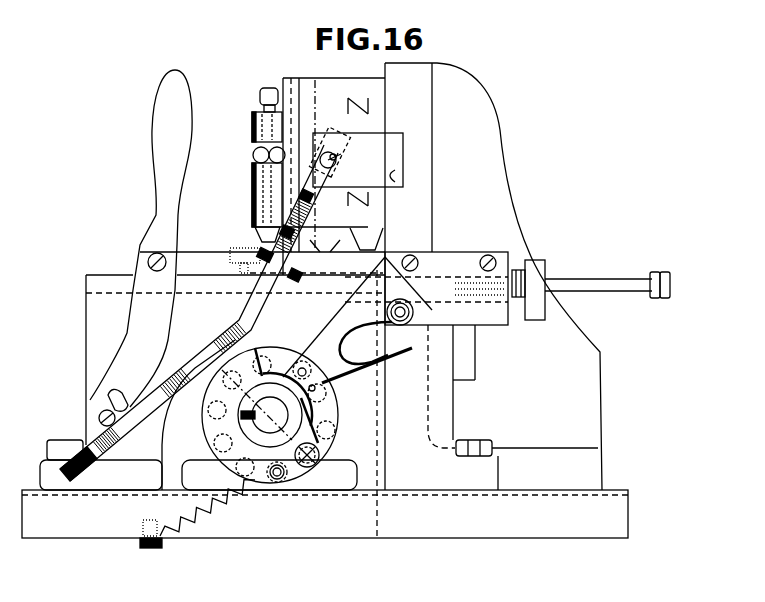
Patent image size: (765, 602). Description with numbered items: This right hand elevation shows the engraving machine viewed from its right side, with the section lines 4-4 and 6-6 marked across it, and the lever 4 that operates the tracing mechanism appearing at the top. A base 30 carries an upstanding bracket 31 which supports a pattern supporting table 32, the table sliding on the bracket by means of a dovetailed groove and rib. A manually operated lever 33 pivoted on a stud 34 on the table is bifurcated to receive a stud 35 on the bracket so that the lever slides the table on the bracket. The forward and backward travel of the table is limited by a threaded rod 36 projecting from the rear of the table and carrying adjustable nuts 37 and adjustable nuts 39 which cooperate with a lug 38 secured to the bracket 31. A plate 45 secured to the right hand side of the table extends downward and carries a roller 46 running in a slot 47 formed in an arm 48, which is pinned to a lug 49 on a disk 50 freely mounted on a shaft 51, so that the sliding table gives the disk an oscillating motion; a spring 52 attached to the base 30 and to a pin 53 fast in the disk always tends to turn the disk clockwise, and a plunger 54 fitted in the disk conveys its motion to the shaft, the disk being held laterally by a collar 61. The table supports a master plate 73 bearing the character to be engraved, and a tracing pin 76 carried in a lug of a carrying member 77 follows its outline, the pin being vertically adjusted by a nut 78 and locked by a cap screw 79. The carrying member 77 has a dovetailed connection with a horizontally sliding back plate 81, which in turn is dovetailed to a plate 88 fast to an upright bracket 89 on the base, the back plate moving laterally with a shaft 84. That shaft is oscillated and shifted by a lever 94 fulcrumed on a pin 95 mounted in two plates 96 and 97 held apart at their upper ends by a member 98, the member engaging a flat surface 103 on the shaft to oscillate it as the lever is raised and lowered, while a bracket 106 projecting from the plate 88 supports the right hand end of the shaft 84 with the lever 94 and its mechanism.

The section line 4-4 / lever 4 is at (348, 132).
The section line 6- 6 is at (205, 337).
The base 30 is at (608, 500).
The upstanding bracket 31 is at (86, 370).
The pattern supporting table 32 is at (200, 253).
The manually operated lever 33 is at (182, 118).
The stud 34 is at (147, 262).
The stud 35 is at (100, 412).
The threaded rod 36 is at (540, 282).
The adjustable nuts 37 is at (517, 258).
The lug 38 is at (535, 322).
The adjustable nuts 39 is at (640, 279).
The plate 45 is at (410, 257).
The roller 46 is at (378, 345).
The slot 47 is at (372, 362).
The arm 48 is at (340, 364).
The lug 49 is at (327, 407).
The disk 50 is at (284, 424).
The shaft 51 is at (305, 452).
The spring 52 is at (226, 500).
The pin 53 is at (280, 478).
The plunger 54 is at (322, 456).
The collar 61 is at (228, 466).
The master plate 73 is at (376, 226).
The tracing pin 76 is at (262, 233).
The carrying member 77 is at (252, 175).
The nut 78 is at (256, 152).
The cap screw 79 is at (259, 95).
The back plate 81 is at (352, 78).
The shaft 84 is at (393, 158).
The plate 88 is at (376, 96).
The upright bracket 89 is at (588, 432).
The lever 94 is at (86, 438).
The pin 95 is at (257, 248).
The plate 96 is at (288, 218).
The plate 97 is at (337, 208).
The member 98 is at (336, 152).
The flat surface 103 is at (338, 160).
The bracket 106 is at (393, 176).